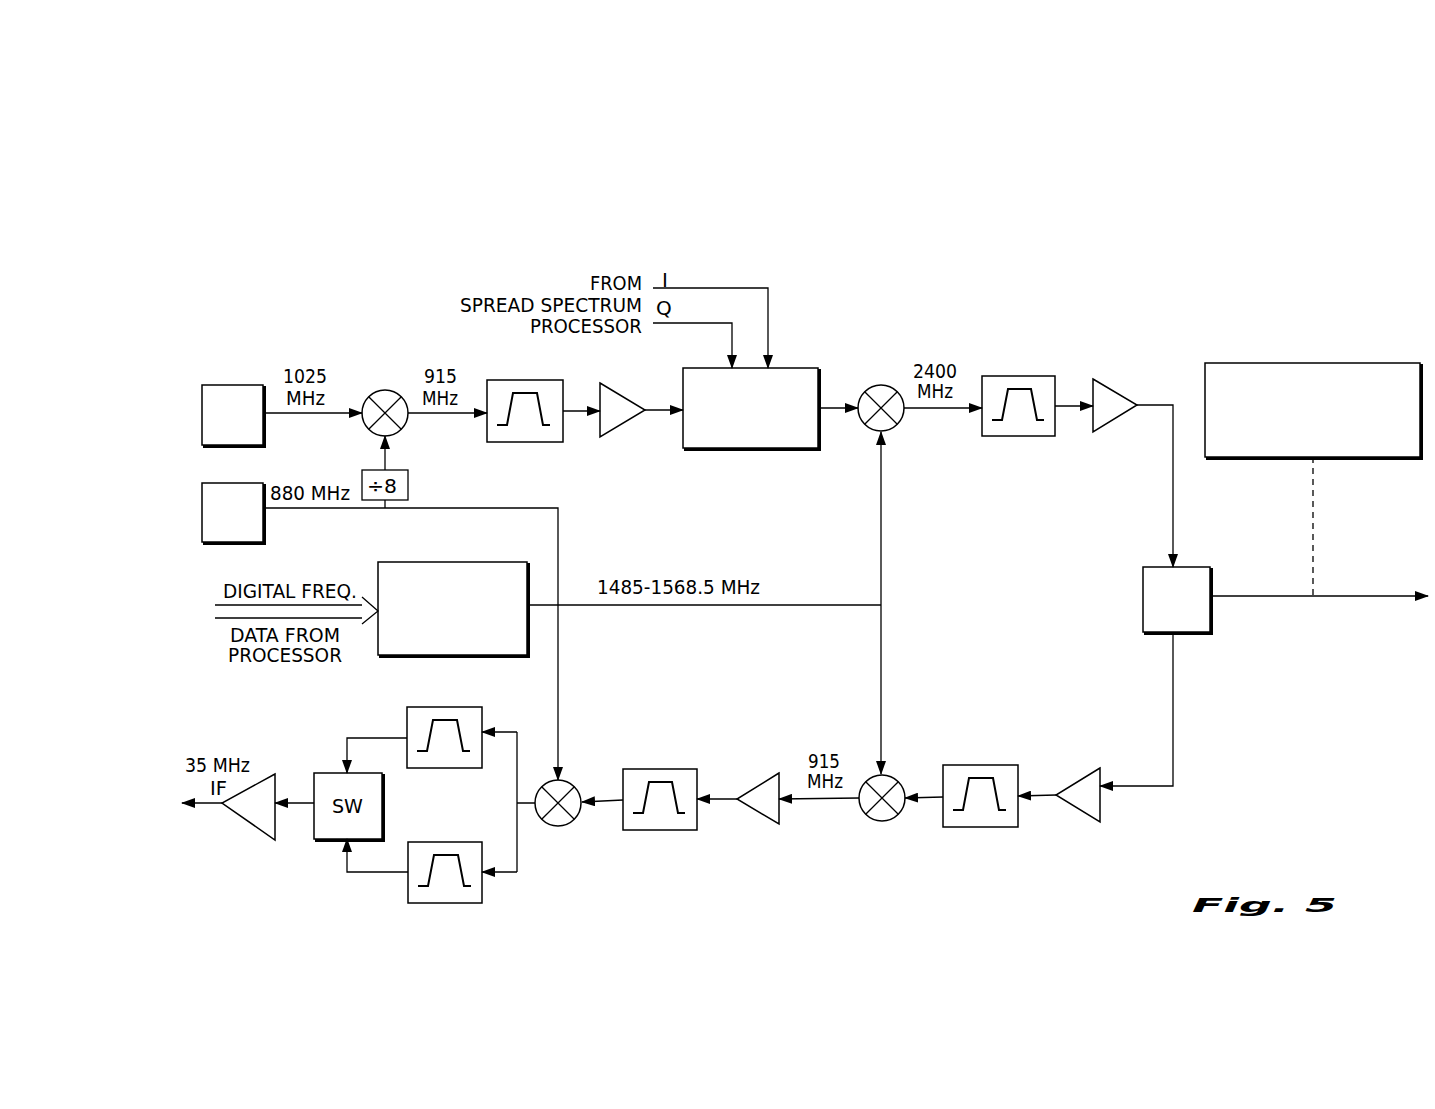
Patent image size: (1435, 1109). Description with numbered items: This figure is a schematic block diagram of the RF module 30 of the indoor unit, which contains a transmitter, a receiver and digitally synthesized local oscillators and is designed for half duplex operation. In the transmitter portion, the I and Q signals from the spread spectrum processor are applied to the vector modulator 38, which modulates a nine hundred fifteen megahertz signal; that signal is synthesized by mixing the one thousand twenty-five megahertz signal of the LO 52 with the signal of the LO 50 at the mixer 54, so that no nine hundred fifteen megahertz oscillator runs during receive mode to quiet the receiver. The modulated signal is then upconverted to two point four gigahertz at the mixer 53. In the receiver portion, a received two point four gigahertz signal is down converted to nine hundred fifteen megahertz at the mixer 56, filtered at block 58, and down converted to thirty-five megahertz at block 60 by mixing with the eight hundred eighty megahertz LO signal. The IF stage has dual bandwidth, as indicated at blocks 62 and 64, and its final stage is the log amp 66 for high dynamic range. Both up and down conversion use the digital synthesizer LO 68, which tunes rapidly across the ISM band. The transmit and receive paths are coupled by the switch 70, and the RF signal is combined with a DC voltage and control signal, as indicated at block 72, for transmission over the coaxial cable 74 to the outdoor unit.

The RF module 30 is at (1205, 272).
The vector modulator 38 is at (742, 448).
The LO 50 is at (202, 522).
The LO 52 is at (202, 405).
The mixer 53 is at (881, 385).
The mixer 54 is at (385, 390).
The mixer 56 is at (882, 821).
The filter block 58 is at (658, 830).
The mixer block 60 is at (558, 826).
The IF bandwidth block 62 is at (407, 718).
The IF bandwidth block 64 is at (408, 893).
The log amp 66 is at (253, 830).
The digital synthesizer LO 68 is at (418, 562).
The switch 70 is at (1143, 592).
The power supply and control logic block 72 is at (1317, 363).
The coaxial cable 74 is at (1330, 596).